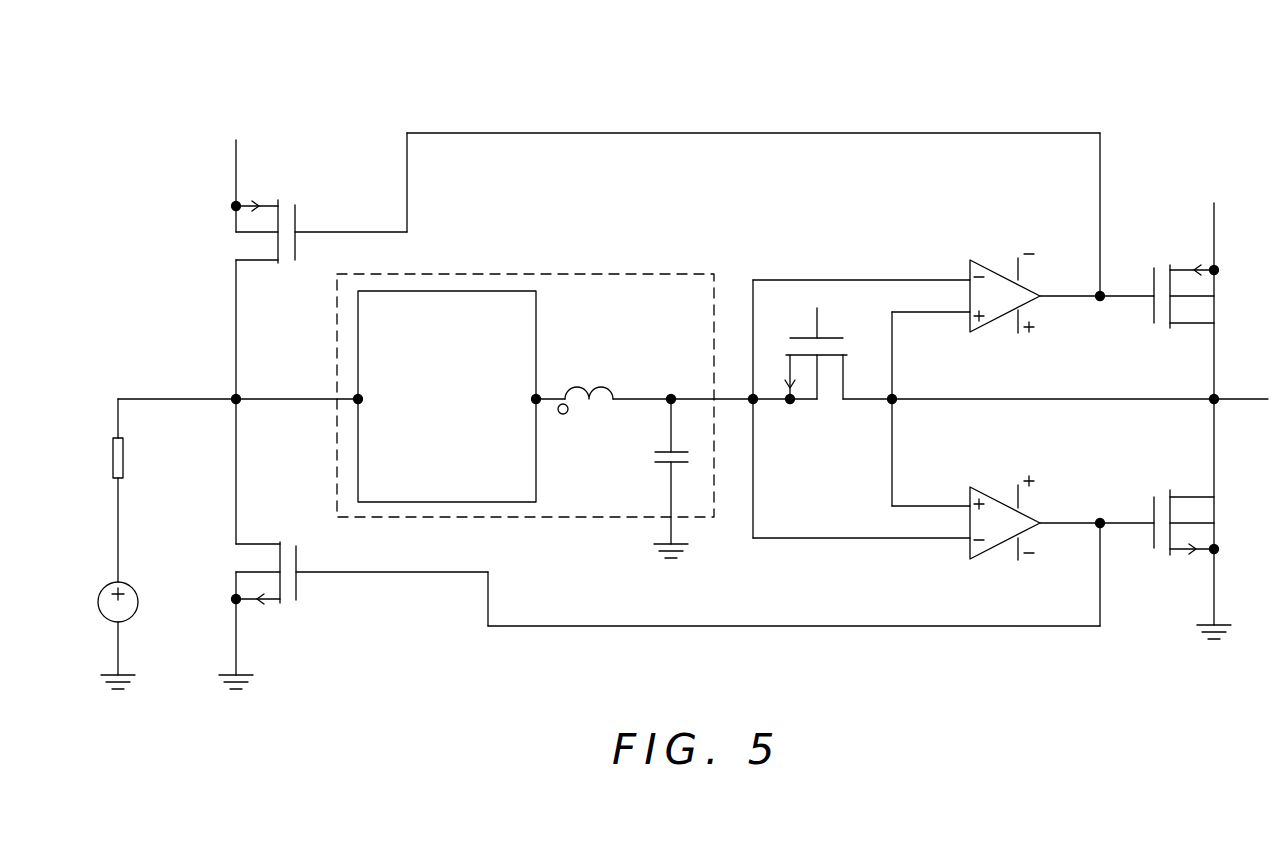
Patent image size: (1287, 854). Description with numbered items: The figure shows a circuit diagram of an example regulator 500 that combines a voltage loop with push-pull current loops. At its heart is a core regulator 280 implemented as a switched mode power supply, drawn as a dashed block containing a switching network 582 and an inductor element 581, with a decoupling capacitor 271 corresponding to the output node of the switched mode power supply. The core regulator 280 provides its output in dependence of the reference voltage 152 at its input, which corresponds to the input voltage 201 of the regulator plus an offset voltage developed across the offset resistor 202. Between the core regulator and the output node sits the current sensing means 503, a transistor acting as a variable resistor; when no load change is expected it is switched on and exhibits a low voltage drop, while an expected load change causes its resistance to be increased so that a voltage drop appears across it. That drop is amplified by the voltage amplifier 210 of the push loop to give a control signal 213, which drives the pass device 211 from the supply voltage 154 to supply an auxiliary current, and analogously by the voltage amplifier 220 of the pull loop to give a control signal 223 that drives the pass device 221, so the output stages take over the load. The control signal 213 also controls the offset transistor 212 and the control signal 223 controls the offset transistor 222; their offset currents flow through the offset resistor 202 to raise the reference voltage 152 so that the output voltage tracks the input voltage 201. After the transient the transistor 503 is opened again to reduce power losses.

The reference voltage 152 is at (290, 403).
The supply voltage 154 is at (238, 134).
The input voltage 201 is at (138, 592).
The offset resistor 202 is at (124, 456).
The voltage amplifier 210 is at (979, 257).
The pass device 211 is at (1160, 264).
The offset transistor 212 is at (290, 197).
The control signal 213 is at (1100, 300).
The voltage amplifier 220 is at (979, 484).
The pass device 221 is at (1160, 490).
The offset transistor 222 is at (290, 538).
The control signal 223 is at (1100, 518).
The decoupling capacitor 271 is at (648, 458).
The core regulator 280 is at (598, 274).
The regulator 500 is at (311, 713).
The current sensing means 503 is at (835, 405).
The inductor element 581 is at (592, 382).
The switching network 582 is at (537, 462).